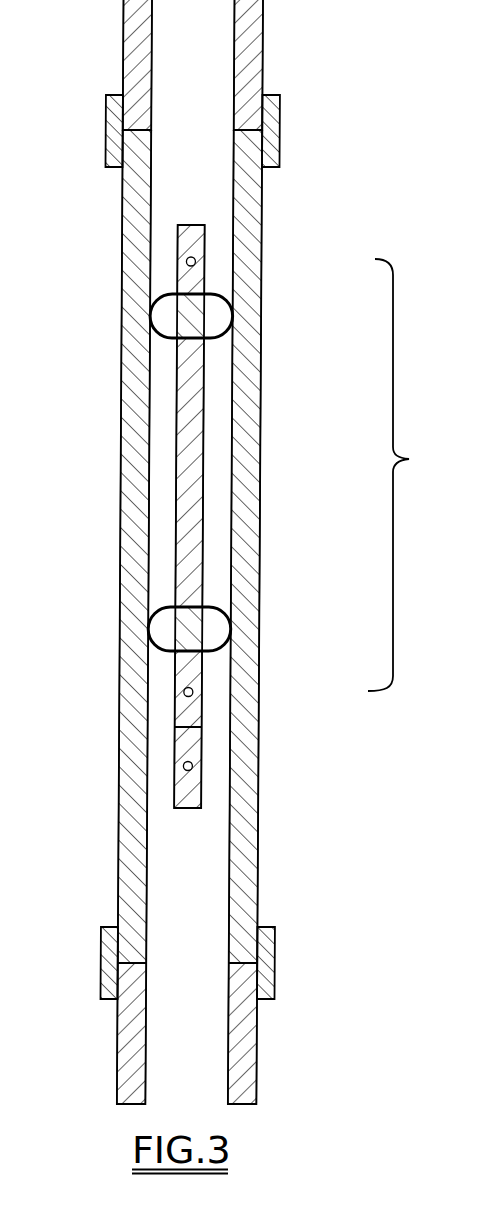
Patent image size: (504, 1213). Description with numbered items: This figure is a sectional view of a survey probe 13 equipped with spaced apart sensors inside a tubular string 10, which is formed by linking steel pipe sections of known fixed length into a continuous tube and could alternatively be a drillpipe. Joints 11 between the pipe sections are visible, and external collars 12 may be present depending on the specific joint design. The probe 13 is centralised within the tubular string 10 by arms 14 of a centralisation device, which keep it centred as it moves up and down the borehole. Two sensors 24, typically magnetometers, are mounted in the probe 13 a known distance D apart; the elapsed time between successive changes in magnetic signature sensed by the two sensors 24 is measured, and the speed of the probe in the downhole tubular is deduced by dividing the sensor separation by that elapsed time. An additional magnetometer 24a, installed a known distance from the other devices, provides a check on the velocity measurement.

The tubular string 10 is at (257, 47).
The joints 11 is at (255, 128).
The external collars 12 is at (270, 147).
The survey probe 13 is at (207, 383).
The arms 14 is at (216, 293).
The sensors 24 is at (200, 253).
The additional magnetometer 24a is at (194, 763).
The known distance D is at (402, 475).